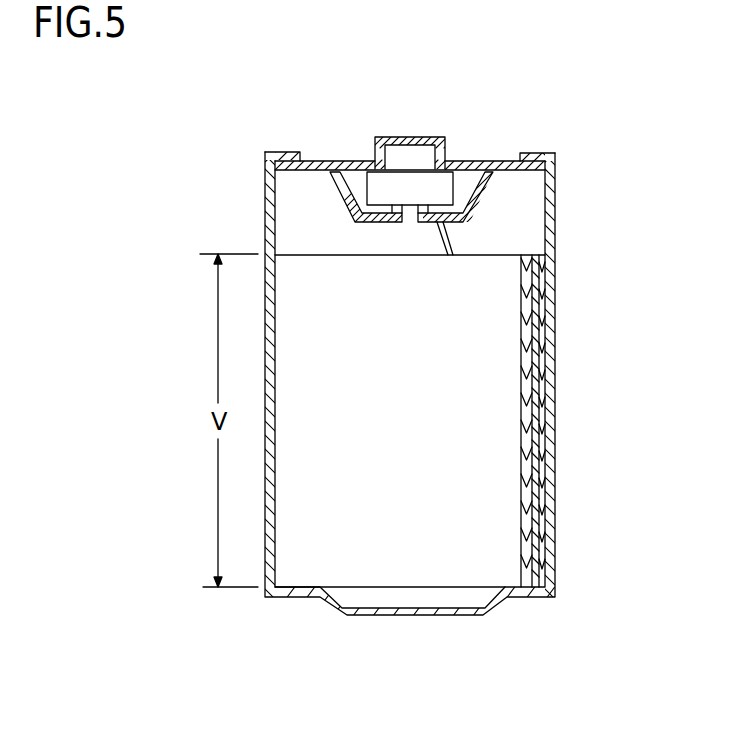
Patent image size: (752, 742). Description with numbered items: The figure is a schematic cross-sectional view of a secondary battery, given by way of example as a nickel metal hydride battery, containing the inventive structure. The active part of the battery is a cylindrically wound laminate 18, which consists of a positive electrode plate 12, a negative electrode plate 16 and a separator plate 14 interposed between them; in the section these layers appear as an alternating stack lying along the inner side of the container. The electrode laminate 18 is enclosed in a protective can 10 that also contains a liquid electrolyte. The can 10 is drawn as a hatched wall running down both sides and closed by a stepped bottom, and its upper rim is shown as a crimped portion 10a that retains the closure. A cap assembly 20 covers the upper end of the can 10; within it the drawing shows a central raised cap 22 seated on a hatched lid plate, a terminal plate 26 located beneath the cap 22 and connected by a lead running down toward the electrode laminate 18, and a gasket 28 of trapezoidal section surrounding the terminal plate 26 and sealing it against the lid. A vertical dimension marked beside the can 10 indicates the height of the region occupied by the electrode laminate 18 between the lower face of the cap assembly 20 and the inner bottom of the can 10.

The protective can 10 is at (550, 323).
The crimped rim of can 10a is at (537, 152).
The positive electrode plate 12 is at (545, 360).
The separator plate 14 is at (542, 397).
The negative electrode plate 16 is at (530, 428).
The cylindrically wound laminate 18 is at (507, 462).
The cap assembly 20 is at (267, 121).
The cap (terminal cap) 22 is at (410, 137).
The terminal plate 26 is at (437, 185).
The gasket 28 is at (410, 222).